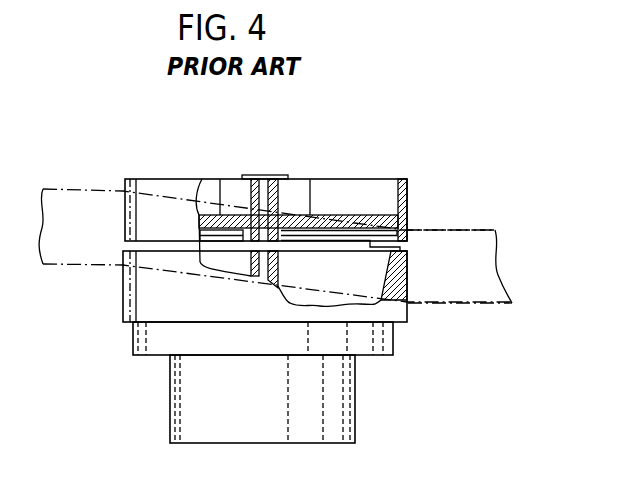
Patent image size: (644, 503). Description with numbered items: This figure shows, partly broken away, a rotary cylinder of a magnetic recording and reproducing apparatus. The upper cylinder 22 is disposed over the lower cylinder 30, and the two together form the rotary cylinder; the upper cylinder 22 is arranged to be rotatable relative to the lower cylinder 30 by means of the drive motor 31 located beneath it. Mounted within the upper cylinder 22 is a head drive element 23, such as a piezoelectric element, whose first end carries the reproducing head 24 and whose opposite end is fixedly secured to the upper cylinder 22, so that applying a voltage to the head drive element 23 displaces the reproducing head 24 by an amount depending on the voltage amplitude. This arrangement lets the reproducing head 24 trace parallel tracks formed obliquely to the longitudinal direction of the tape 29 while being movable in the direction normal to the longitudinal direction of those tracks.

The upper cylinder 22 is at (157, 179).
The head drive element 23 is at (362, 213).
The reproducing head 24 is at (408, 230).
The tape 29 is at (484, 230).
The lower cylinder 30 is at (123, 307).
The drive motor 31 is at (170, 398).